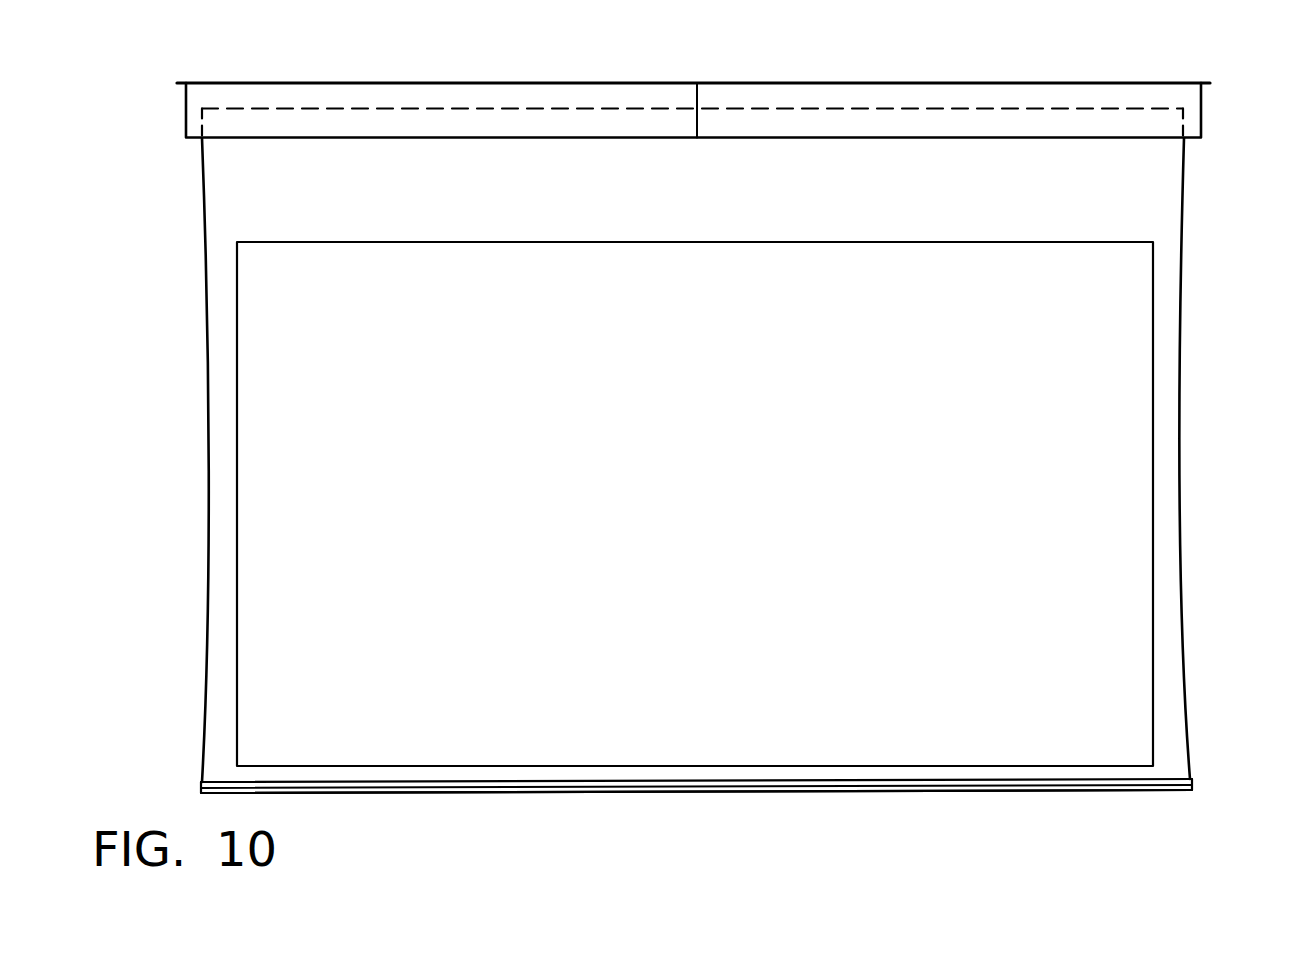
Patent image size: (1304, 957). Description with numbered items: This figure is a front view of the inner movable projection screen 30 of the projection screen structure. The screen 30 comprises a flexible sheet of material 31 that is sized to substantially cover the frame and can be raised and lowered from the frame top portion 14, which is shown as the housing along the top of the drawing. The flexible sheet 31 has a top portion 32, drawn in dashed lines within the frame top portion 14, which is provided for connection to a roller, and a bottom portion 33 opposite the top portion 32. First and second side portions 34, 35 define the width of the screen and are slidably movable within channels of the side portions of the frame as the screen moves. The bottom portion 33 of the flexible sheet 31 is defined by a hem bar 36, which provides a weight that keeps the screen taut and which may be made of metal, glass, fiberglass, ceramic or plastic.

The frame top portion 14 is at (886, 83).
The inner movable projection screen 30 is at (705, 500).
The flexible sheet of material 31 is at (617, 287).
The top portion 32 is at (536, 108).
The bottom portion 33 is at (712, 781).
The first side portion 34 is at (209, 530).
The second side portion 35 is at (1183, 545).
The hem bar 36 is at (788, 793).